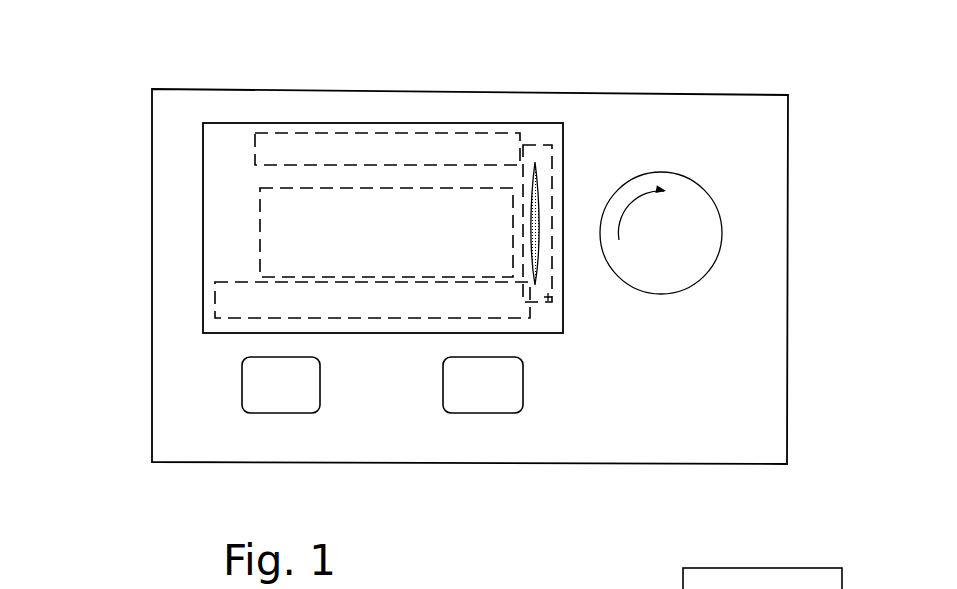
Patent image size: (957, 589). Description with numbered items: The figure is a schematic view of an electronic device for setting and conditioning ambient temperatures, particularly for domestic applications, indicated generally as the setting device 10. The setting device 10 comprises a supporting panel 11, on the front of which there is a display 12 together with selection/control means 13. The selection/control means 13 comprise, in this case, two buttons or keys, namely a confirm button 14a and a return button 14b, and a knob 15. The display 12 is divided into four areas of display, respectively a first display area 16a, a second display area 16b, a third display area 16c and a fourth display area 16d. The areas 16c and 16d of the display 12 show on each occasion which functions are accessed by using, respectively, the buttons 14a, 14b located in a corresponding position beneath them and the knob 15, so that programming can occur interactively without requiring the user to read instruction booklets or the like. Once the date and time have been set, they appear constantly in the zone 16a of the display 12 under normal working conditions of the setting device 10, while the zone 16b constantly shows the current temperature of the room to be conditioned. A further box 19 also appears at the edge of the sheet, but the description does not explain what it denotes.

The setting device 10 is at (805, 332).
The supporting panel 11 is at (747, 429).
The display 12 is at (225, 152).
The selection/control means 13 is at (627, 378).
The confirm button 14a is at (272, 393).
The return button 14b is at (478, 394).
The knob 15 is at (692, 233).
The display area 16a is at (318, 138).
The display area 16b is at (273, 222).
The display area 16c is at (233, 300).
The display area 16d is at (542, 160).
The sensors and actuators block 19 is at (794, 578).